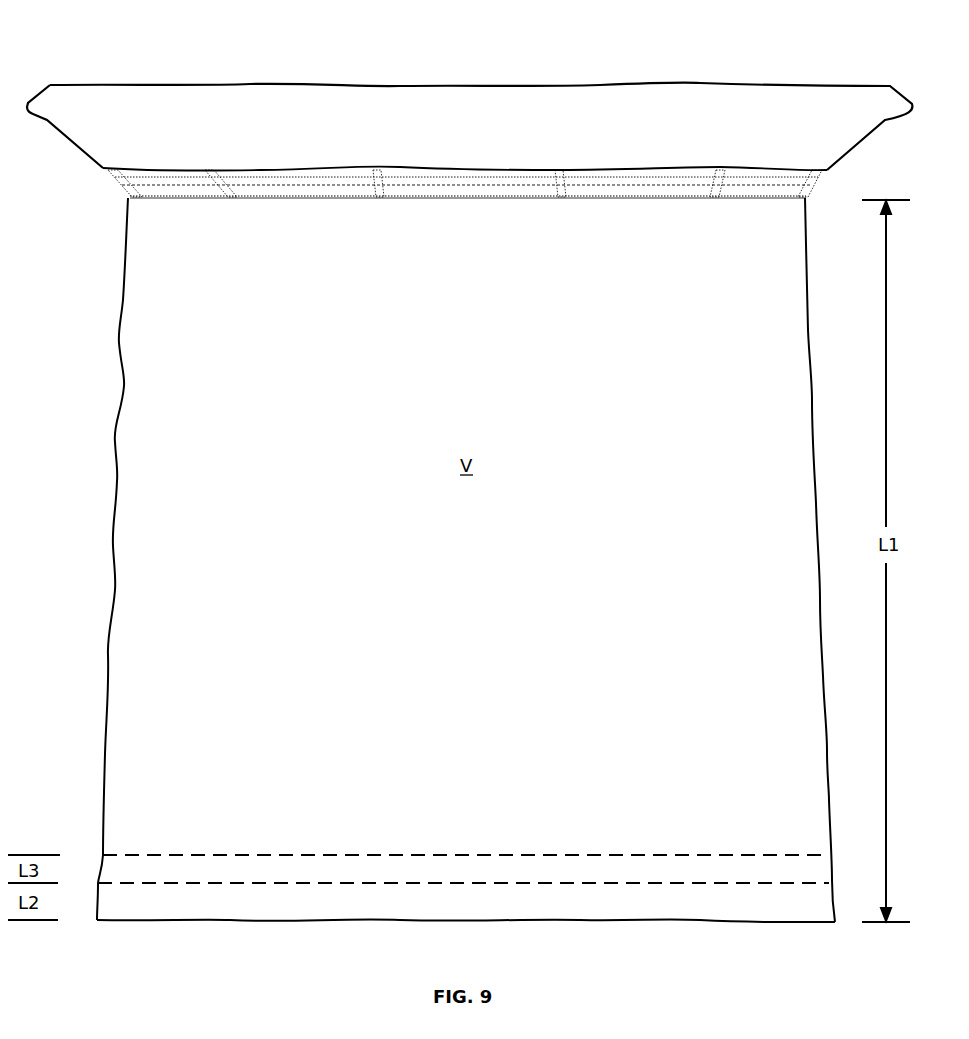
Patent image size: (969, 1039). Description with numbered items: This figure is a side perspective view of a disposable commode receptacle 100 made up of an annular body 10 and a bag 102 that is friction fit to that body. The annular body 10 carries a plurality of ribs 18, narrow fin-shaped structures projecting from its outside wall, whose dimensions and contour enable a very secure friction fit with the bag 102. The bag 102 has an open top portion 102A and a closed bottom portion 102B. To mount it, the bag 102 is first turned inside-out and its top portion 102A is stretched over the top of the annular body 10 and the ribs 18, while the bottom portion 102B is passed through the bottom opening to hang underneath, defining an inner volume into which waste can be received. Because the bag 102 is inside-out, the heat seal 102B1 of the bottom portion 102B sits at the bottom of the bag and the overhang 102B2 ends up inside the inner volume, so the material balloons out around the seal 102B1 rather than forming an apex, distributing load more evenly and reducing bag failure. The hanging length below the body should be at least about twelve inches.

The disposable commode receptacle 100 is at (764, 55).
The top portion 102A is at (191, 108).
The annular body 10 is at (108, 193).
The ribs 18 is at (824, 180).
The bag 102 is at (108, 451).
The bottom portion 102B is at (136, 828).
The overhang 102B2 is at (353, 867).
The seal 102B1 is at (227, 908).